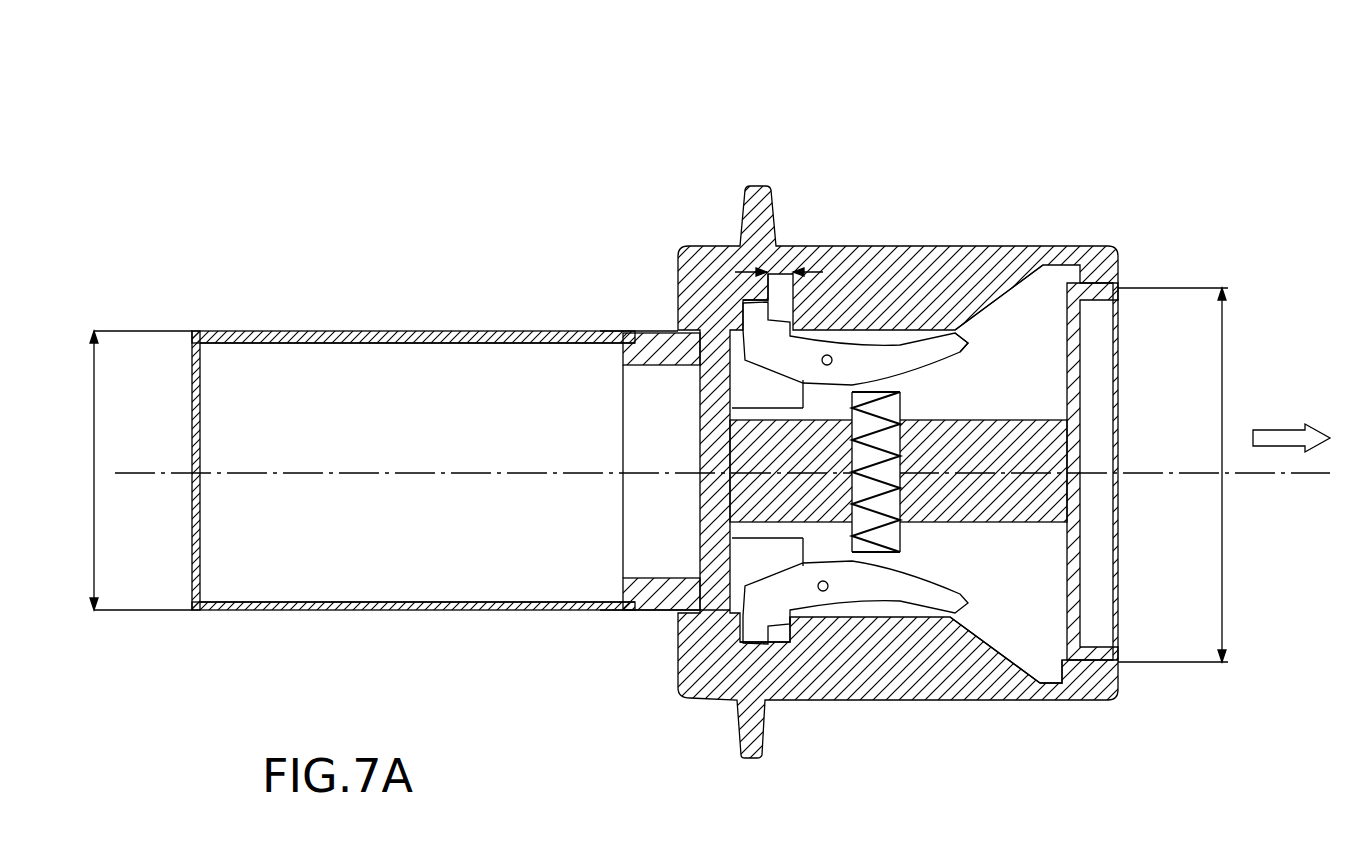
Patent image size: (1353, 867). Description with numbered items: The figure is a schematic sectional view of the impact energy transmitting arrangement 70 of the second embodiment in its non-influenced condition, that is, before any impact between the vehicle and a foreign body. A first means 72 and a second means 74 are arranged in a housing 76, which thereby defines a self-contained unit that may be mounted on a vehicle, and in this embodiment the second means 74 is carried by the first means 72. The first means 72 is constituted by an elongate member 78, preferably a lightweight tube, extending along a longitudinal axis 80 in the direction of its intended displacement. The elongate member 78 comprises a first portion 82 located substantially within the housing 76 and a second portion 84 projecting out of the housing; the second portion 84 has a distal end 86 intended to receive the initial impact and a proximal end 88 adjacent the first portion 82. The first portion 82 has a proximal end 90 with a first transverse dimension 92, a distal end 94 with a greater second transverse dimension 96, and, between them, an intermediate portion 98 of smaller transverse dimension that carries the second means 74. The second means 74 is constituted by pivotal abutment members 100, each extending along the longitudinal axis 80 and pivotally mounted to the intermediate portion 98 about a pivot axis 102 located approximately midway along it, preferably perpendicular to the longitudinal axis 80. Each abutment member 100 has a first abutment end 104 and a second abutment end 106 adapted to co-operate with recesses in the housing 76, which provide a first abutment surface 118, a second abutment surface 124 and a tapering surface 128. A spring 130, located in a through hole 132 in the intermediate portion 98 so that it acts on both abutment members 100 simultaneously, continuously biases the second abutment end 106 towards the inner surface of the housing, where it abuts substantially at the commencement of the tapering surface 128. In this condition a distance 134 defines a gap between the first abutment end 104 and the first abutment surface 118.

The impact energy transmitting arrangement 70 is at (372, 133).
The first means 72 is at (374, 469).
The second means 74 is at (897, 414).
The housing 76 is at (705, 262).
The elongate member 78 is at (405, 370).
The longitudinal axis 80 is at (1283, 476).
The first portion 82 is at (1100, 443).
The second portion 84 is at (420, 612).
The distal end 86 is at (192, 448).
The proximal end 88 is at (628, 612).
The proximal end 90 is at (652, 612).
The first transverse dimension 92 is at (90, 450).
The distal end 94 is at (1108, 566).
The second transverse dimension 96 is at (1222, 558).
The intermediate portion 98 is at (1027, 508).
The pivotal abutment member 100 is at (822, 350).
The pivot axis 102 is at (866, 358).
The first abutment end 104 is at (740, 318).
The second abutment end 106 is at (962, 348).
The first abutment surface 118 is at (773, 640).
The second abutment surface 124 is at (1062, 688).
The tapering surface 128 is at (1000, 685).
The spring 130 is at (920, 365).
The through hole 132 is at (902, 515).
The distance 134 is at (782, 248).